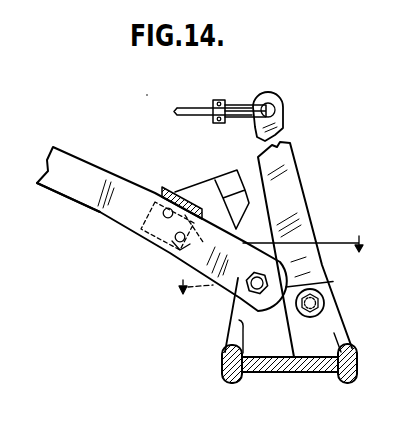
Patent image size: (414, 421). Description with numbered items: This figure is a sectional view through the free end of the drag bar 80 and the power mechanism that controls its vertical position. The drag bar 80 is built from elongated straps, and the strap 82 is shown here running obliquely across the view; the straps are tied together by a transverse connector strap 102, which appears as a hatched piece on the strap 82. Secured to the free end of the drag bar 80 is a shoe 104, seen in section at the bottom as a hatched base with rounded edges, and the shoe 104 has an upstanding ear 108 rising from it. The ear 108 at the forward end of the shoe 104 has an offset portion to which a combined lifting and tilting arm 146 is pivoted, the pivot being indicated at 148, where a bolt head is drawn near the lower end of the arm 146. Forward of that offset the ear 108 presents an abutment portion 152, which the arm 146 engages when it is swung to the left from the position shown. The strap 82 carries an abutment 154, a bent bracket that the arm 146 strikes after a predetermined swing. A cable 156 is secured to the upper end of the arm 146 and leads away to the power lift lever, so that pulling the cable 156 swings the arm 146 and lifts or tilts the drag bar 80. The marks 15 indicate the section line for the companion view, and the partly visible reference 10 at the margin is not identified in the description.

The apparatus 10 is at (409, 211).
The section line 15- 15 is at (275, 265).
The drag bar 80 is at (74, 204).
The elongated strap 82 is at (87, 167).
The transverse connector strap 102 is at (168, 186).
The shoe 104 is at (357, 362).
The ear 108 is at (231, 317).
The combined lifting and tilting arm 146 is at (305, 200).
The pivot 148 is at (321, 307).
The abutment portion 152 is at (333, 282).
The abutment 154 is at (202, 184).
The cable 156 is at (196, 106).